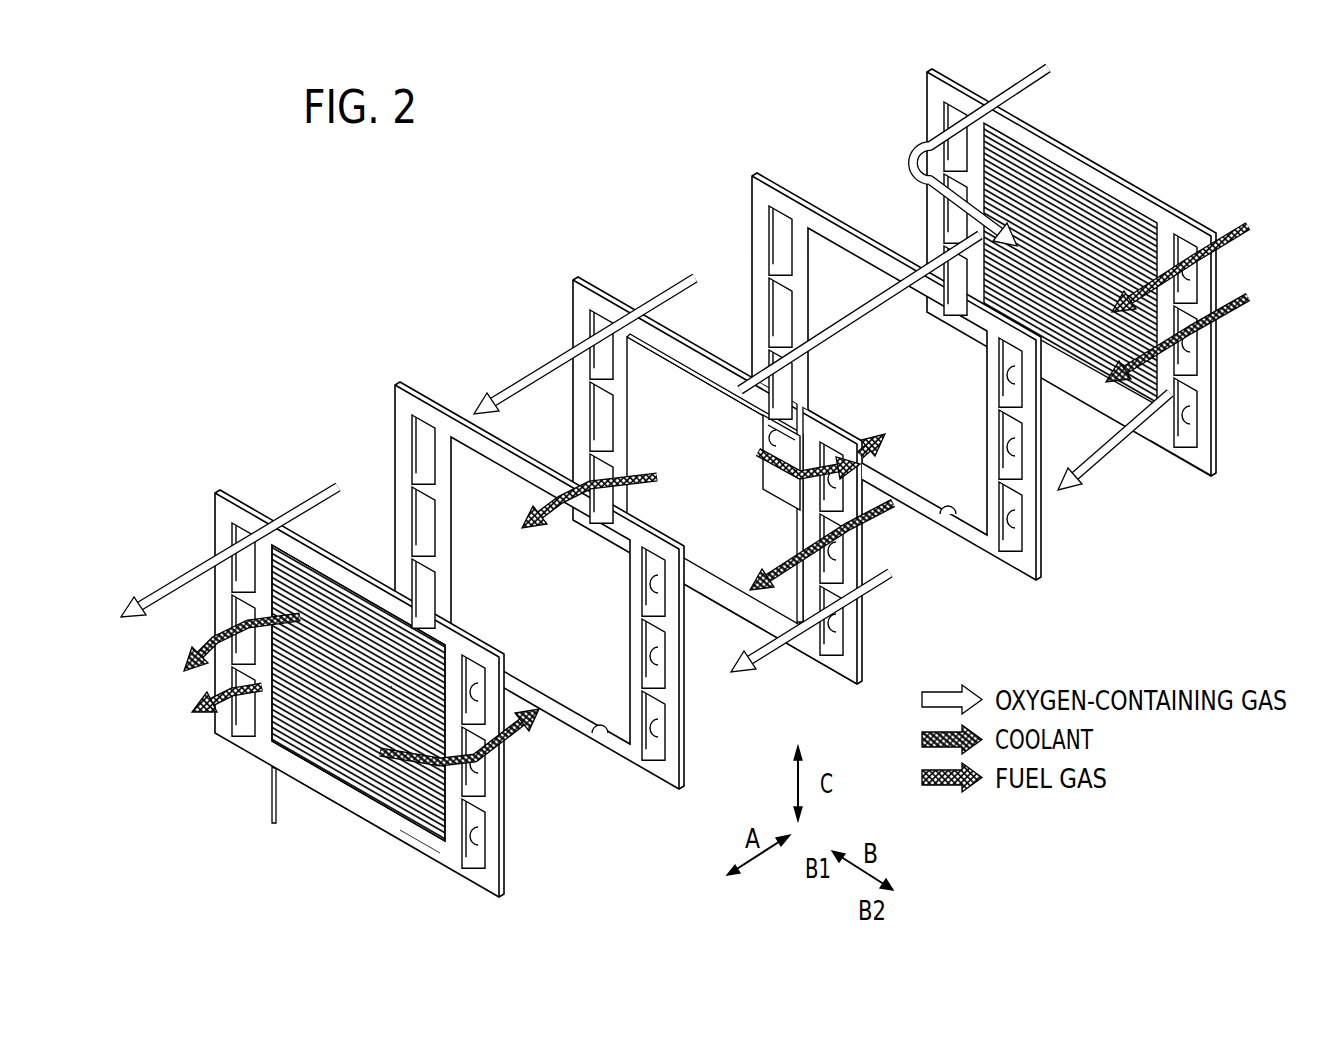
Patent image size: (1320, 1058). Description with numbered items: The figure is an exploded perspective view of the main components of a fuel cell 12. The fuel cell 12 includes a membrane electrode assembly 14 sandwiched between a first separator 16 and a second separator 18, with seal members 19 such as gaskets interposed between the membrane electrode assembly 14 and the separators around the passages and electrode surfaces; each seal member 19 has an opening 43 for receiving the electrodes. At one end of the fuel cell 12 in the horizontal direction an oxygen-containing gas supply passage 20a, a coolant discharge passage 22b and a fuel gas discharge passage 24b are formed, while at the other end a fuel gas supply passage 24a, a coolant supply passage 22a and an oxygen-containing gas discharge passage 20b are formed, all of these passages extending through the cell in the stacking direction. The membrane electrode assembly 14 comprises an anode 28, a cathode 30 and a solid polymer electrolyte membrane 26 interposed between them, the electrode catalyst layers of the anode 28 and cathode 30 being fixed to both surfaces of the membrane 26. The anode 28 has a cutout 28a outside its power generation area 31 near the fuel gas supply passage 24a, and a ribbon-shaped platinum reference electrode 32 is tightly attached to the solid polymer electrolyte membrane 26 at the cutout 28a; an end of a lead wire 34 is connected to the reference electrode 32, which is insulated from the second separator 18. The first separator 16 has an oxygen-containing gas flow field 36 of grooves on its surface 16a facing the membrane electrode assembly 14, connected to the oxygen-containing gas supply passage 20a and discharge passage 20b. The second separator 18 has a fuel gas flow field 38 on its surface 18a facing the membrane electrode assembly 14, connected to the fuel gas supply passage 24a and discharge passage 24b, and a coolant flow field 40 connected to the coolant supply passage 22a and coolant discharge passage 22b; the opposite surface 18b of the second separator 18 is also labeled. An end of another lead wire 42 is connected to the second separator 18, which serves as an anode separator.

The fuel cell 12 is at (551, 184).
The membrane electrode assembly 14 is at (598, 276).
The first separator 16 is at (966, 78).
The surface of first separator 16a is at (1192, 455).
The second separator 18 is at (238, 488).
The surface of second separator 18a is at (410, 830).
The surface of second separator 18b is at (366, 800).
The seal member 19 is at (795, 188).
The oxygen-containing gas supply passage 20a is at (240, 537).
The oxygen-containing gas discharge passage 20b is at (490, 838).
The coolant supply passage 22a is at (480, 762).
The coolant discharge passage 22b is at (240, 622).
The fuel gas supply passage 24a is at (482, 685).
The fuel gas discharge passage 24b is at (240, 690).
The solid polymer electrolyte membrane 26 is at (833, 660).
The anode 28 is at (733, 586).
The cutout 28a is at (787, 424).
The cathode 30 is at (660, 378).
The power generation area 31 is at (700, 422).
The reference electrode 32 is at (785, 488).
The lead wire 34 is at (805, 386).
The oxygen-containing gas flow field 36 is at (1130, 240).
The fuel gas flow field 38 is at (350, 630).
The coolant flow field 40 is at (316, 610).
The lead wire 42 is at (270, 793).
The opening 43 is at (600, 736).